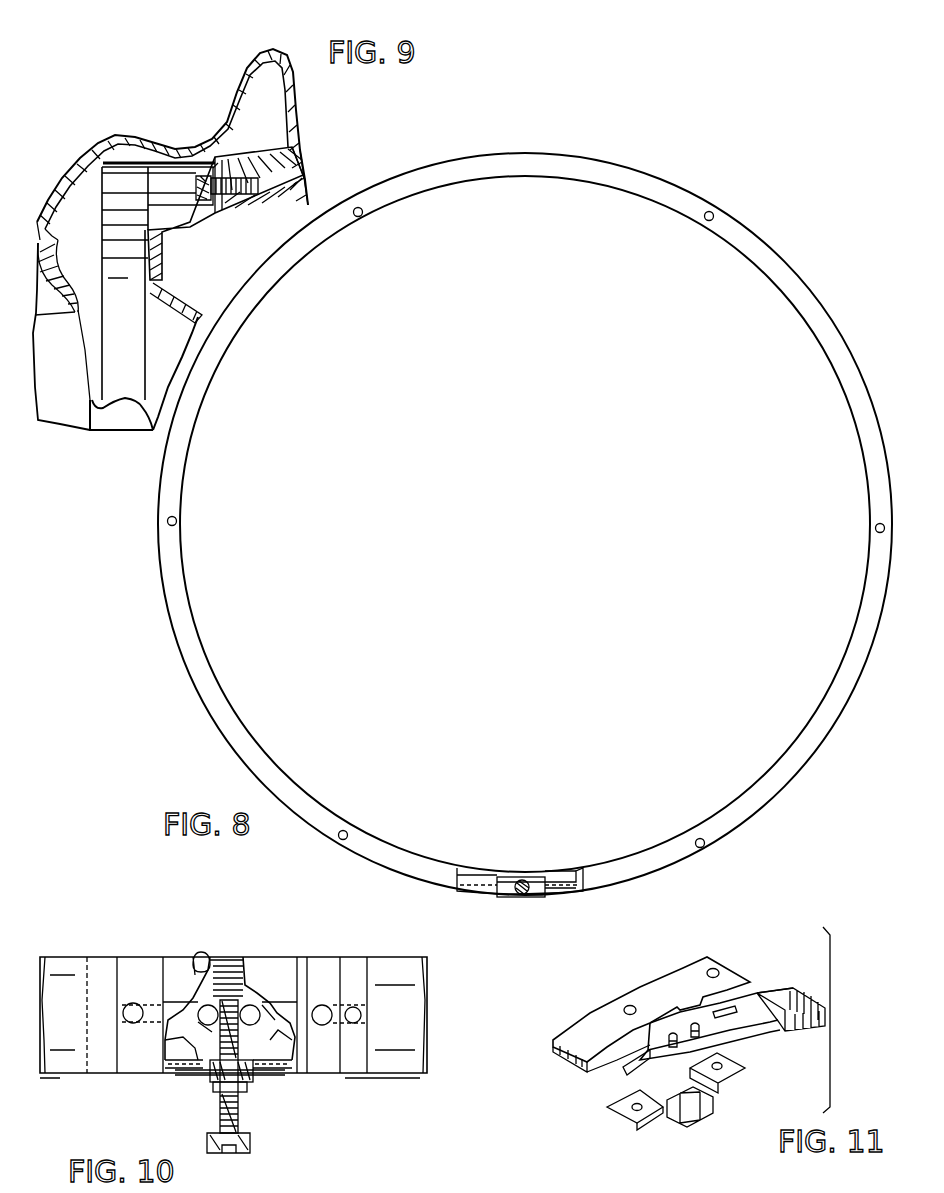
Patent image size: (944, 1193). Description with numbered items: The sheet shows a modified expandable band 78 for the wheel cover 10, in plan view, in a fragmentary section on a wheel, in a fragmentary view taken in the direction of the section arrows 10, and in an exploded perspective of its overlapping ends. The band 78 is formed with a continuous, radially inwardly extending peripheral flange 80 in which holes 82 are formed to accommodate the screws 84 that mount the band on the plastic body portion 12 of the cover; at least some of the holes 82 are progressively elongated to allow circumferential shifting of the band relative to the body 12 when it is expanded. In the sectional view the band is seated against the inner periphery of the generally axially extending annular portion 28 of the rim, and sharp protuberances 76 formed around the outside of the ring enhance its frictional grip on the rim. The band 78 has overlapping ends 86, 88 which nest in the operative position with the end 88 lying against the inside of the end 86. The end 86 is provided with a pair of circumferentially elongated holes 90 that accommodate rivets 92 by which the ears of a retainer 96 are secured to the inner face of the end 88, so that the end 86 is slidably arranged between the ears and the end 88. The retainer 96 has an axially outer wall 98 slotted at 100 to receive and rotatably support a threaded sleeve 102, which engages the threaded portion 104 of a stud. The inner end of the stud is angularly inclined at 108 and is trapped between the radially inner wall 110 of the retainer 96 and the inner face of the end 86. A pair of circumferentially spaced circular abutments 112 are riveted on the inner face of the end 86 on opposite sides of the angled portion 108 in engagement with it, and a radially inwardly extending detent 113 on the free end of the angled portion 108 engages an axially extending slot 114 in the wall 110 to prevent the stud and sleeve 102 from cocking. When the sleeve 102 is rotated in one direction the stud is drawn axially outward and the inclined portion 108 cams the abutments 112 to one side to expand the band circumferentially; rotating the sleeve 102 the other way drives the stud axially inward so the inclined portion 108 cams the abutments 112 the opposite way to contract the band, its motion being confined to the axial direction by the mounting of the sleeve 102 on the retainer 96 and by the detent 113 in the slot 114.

In FIG. 8, the wheel cover 10 is at (607, 856).
In FIG. 9, the body portion 12 is at (317, 158).
In FIG. 9, the axially extending annular portion 28 is at (170, 148).
In FIG. 9, the sharp protuberances 76 is at (129, 419).
In FIG. 8, the expandable band 78 is at (229, 675).
In FIG. 9, the peripheral flange 80 is at (218, 211).
In FIG. 8, the peripheral flange 80 is at (184, 596).
In FIG. 9, the holes 82 is at (221, 161).
In FIG. 8, the holes 82 is at (364, 218).
In FIG. 9, the screws 84 is at (199, 185).
In FIG. 8, the band end 86 is at (572, 875).
In FIG. 10, the band end 86 is at (420, 1033).
In FIG. 11, the band end 86 is at (620, 1073).
In FIG. 8, the band end 88 is at (462, 892).
In FIG. 10, the band end 88 is at (87, 975).
In FIG. 11, the band end 88 is at (635, 1128).
In FIG. 10, the circumferentially elongated holes 90 is at (361, 1014).
In FIG. 10, the rivets 92 is at (135, 1002).
In FIG. 11, the retainer 96 is at (606, 1120).
In FIG. 8, the axially outer wall 98 is at (500, 876).
In FIG. 10, the axially outer wall 98 is at (252, 1077).
In FIG. 10, the slot 100 is at (208, 1068).
In FIG. 11, the slot 100 is at (707, 1107).
In FIG. 8, the threaded sleeve 102 is at (527, 893).
In FIG. 10, the threaded sleeve 102 is at (243, 1110).
In FIG. 10, the threaded portion 104 is at (247, 1093).
In FIG. 10, the angularly inclined portion 108 is at (236, 1000).
In FIG. 10, the radially inner wall 110 is at (295, 975).
In FIG. 11, the radially inner wall 110 is at (663, 1122).
In FIG. 10, the circular abutments 112 is at (252, 1004).
In FIG. 11, the circular abutments 112 is at (680, 1040).
In FIG. 10, the detent 113 is at (199, 952).
In FIG. 10, the axially extending slot 114 is at (205, 985).
In FIG. 11, the axially extending slot 114 is at (673, 1083).